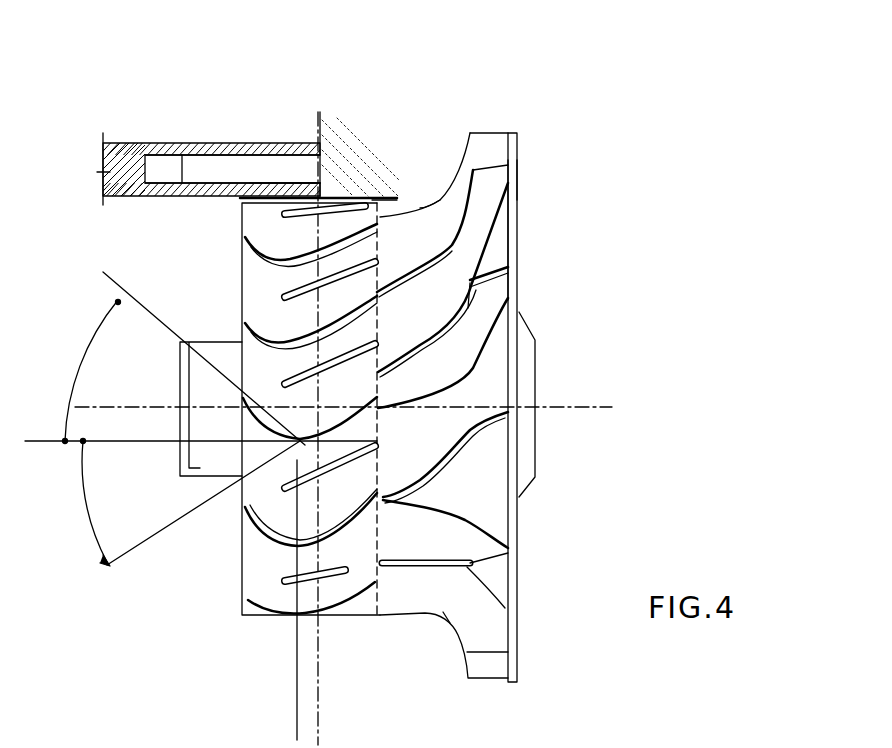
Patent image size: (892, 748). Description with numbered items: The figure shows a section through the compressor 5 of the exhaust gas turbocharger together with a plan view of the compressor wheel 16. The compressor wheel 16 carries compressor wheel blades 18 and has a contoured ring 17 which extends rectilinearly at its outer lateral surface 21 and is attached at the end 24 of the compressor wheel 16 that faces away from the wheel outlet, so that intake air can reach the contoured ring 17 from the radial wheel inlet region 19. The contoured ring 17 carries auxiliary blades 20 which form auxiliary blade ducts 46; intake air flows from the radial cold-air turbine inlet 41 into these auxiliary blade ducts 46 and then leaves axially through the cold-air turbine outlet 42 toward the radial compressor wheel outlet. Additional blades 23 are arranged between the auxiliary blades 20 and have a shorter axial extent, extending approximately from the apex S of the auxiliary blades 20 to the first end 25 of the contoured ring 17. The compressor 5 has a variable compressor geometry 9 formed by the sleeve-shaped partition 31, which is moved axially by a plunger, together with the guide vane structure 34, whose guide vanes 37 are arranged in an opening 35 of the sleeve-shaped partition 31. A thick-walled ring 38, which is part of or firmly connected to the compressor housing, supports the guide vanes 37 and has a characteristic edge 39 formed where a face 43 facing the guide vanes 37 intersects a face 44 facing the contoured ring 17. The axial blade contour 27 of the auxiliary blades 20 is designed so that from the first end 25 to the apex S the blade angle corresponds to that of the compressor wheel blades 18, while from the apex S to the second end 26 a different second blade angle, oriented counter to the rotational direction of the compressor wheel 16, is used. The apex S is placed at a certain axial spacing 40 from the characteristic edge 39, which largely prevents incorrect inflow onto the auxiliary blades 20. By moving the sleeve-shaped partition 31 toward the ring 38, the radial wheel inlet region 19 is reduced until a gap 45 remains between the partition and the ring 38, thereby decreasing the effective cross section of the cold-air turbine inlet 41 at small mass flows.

The compressor 5 is at (447, 45).
The variable compressor geometry 9 is at (173, 57).
The compressor wheel 16 is at (519, 189).
The contoured ring 17 is at (248, 583).
The compressor wheel blades 18 is at (510, 130).
The radial wheel inlet region 19 is at (290, 100).
The auxiliary blades 20 is at (279, 622).
The outer lateral surface 21 is at (232, 167).
The additional blades 23 is at (332, 445).
The end of the compressor wheel 24 is at (520, 232).
The first end of the contoured ring 25 is at (396, 538).
The second end of the contoured ring 26 is at (238, 302).
The axial blade contour 27 is at (240, 400).
The sleeve-shaped partition 31 is at (127, 160).
The guide vane structure 34 is at (296, 136).
The opening 35 is at (163, 166).
The guide vanes 37 is at (268, 172).
The thick-walled ring 38 is at (330, 135).
The characteristic edge 39 is at (348, 190).
The axial spacing 40 is at (343, 727).
The radial cold-air turbine inlet 41 is at (262, 200).
The cold-air turbine outlet 42 is at (422, 195).
The face of the ring facing the guide vanes 43 is at (322, 150).
The face of the ring facing the contoured ring 44 is at (367, 198).
The gap 45 is at (305, 186).
The auxiliary blade ducts 46 is at (233, 563).
The axial distance A is at (288, 320).
The apex S is at (298, 452).